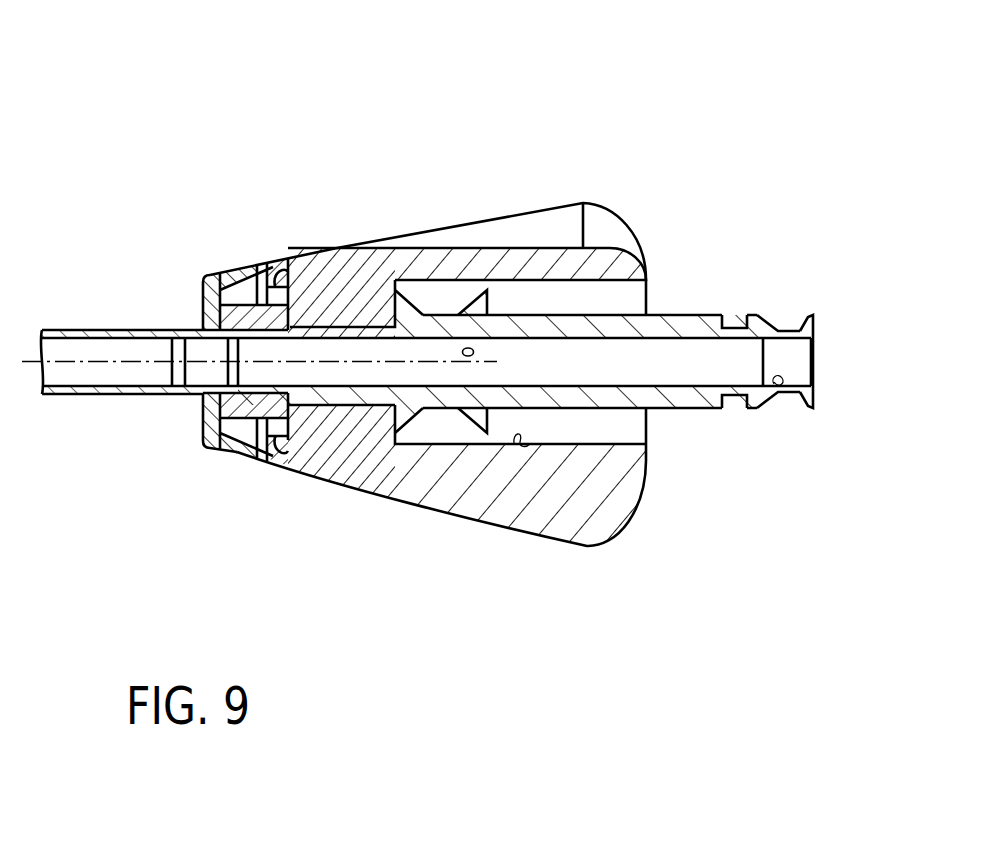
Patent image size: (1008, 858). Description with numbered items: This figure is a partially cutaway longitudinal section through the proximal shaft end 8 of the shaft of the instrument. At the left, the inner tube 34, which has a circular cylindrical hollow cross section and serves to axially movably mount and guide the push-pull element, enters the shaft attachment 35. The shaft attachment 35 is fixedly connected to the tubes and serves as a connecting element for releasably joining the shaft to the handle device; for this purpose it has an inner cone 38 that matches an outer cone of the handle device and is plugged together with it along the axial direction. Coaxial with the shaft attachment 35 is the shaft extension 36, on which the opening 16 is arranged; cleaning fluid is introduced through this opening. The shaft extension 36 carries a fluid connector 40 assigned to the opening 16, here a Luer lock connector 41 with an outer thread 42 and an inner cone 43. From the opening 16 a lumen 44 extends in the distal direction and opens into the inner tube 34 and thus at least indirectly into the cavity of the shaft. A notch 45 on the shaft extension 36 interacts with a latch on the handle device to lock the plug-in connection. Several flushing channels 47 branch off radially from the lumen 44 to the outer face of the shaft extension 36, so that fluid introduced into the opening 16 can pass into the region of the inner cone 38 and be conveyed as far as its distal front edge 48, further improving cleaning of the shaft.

The proximal shaft end 8 is at (455, 110).
The opening 16 is at (836, 352).
The inner tube 34 is at (112, 400).
The shaft attachment 35 is at (320, 250).
The shaft extension 36 is at (677, 327).
The inner cone 38 is at (520, 446).
The fluid connector 40 is at (816, 290).
The Luer lock connector 41 is at (807, 417).
The outer thread 42 is at (813, 410).
The inner cone 43 is at (782, 388).
The lumen 44 is at (328, 367).
The notch 45 is at (730, 326).
The flushing channels 47 is at (468, 350).
The distal front edge 48 is at (396, 446).